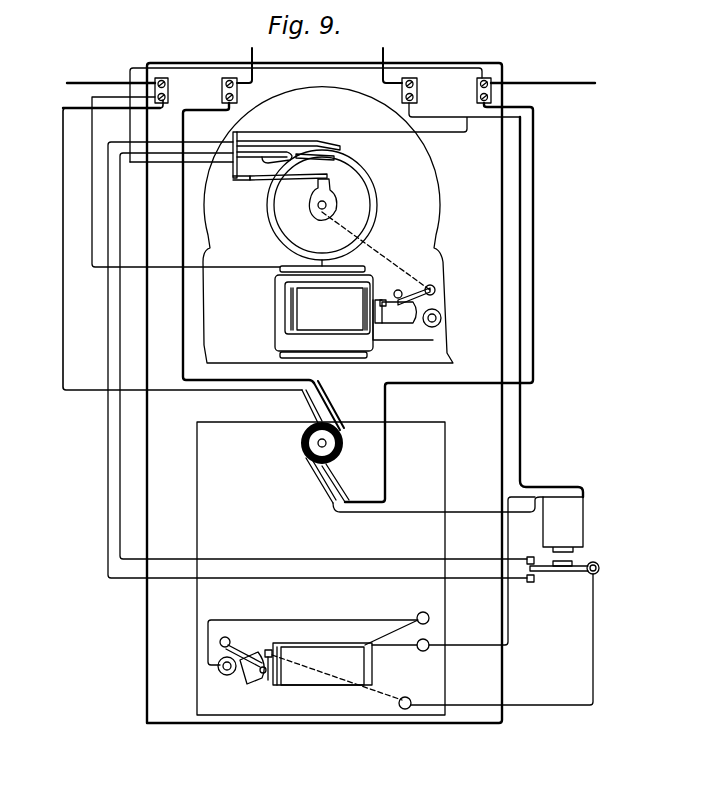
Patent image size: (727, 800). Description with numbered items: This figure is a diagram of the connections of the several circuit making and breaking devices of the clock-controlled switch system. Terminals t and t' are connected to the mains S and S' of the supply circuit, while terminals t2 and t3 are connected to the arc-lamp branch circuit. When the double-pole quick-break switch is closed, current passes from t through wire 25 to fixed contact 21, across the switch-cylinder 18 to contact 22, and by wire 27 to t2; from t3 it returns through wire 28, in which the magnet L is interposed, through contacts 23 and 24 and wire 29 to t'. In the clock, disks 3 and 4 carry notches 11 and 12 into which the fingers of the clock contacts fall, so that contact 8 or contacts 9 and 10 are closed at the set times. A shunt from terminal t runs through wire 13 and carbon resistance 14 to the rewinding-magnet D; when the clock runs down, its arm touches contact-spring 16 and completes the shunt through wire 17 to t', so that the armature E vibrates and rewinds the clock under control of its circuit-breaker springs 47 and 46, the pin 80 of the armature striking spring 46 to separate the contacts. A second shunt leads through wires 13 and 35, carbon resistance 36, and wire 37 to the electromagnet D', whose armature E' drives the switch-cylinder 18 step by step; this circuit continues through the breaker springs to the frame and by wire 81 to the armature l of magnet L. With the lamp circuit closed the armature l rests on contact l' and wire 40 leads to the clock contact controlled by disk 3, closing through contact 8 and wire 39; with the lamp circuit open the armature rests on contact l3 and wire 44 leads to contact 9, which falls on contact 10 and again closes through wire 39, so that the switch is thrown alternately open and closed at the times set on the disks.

The wire 39 is at (305, 68).
The magnet L is at (407, 295).
The main or lead S is at (101, 81).
The main or lead S' is at (543, 75).
The terminal t is at (167, 90).
The terminal t2 is at (240, 92).
The terminal t3 is at (417, 90).
The terminal t' is at (475, 88).
The wire 13 is at (176, 182).
The wire 25 is at (171, 245).
The wire 44 is at (317, 428).
The wire 40 is at (323, 356).
The wire 17 is at (378, 117).
The wire 28 is at (458, 323).
The wire 37 is at (505, 432).
The wire 29 is at (451, 302).
The wire 27 is at (185, 340).
The disk 3 is at (322, 205).
The disk 4 is at (378, 197).
The contact-spring 16 is at (340, 232).
The contact 8 is at (245, 171).
The contact 9 is at (296, 140).
The contact 10 is at (265, 150).
The notch 11 is at (334, 160).
The carbon resistance 14 is at (292, 265).
The notch 12 is at (330, 262).
The wire 35 is at (312, 313).
The magnet D is at (327, 308).
The carbon resistance 36 is at (342, 356).
The armature E is at (403, 320).
The pin 80 is at (385, 295).
The contact-spring 47 is at (414, 294).
The contact-spring 46 is at (426, 325).
The cylinder 18 is at (336, 443).
The fixed contact 21 is at (305, 406).
The fixed contact 22 is at (330, 405).
The fixed contact 23 is at (319, 479).
The fixed contact 24 is at (338, 483).
The armature l is at (564, 575).
The contact l' is at (528, 552).
The contact l3 is at (528, 587).
The wire 81 is at (513, 639).
The electromagnet D' is at (318, 660).
The armature E' is at (253, 674).